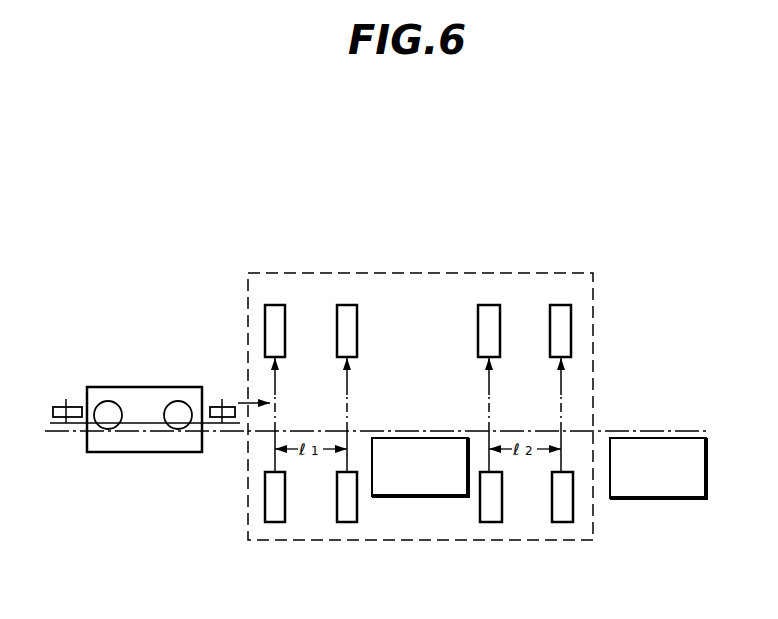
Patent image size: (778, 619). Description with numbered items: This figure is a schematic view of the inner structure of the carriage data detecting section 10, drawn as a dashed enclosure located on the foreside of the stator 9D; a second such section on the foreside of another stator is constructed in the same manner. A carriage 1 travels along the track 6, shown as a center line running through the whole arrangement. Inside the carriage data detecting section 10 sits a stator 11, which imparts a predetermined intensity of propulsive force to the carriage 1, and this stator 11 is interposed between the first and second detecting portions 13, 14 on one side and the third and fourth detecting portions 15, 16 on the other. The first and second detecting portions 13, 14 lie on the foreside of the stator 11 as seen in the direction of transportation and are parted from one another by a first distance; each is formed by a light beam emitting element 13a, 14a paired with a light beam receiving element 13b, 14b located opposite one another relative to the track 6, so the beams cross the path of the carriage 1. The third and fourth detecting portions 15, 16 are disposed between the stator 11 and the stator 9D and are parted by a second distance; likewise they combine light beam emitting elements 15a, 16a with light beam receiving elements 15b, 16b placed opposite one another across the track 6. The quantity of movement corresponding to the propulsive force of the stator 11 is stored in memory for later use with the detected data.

The carriage 1 is at (148, 378).
The track 6 is at (388, 425).
The stator 9D is at (688, 498).
The carriage data detecting section 10 is at (247, 498).
The stator 11 is at (447, 496).
The first detecting portion 13 is at (247, 414).
The light beam emitting element 13a is at (275, 522).
The light beam receiving element 13b is at (275, 305).
The second detecting portion 14 is at (377, 413).
The light beam emitting element 14a is at (347, 522).
The light beam receiving element 14b is at (347, 305).
The third detecting portion 15 is at (491, 405).
The light beam emitting element 15a is at (492, 522).
The light beam receiving element 15b is at (490, 305).
The fourth detecting portion 16 is at (600, 419).
The light beam emitting element 16a is at (565, 522).
The light beam receiving element 16b is at (572, 305).